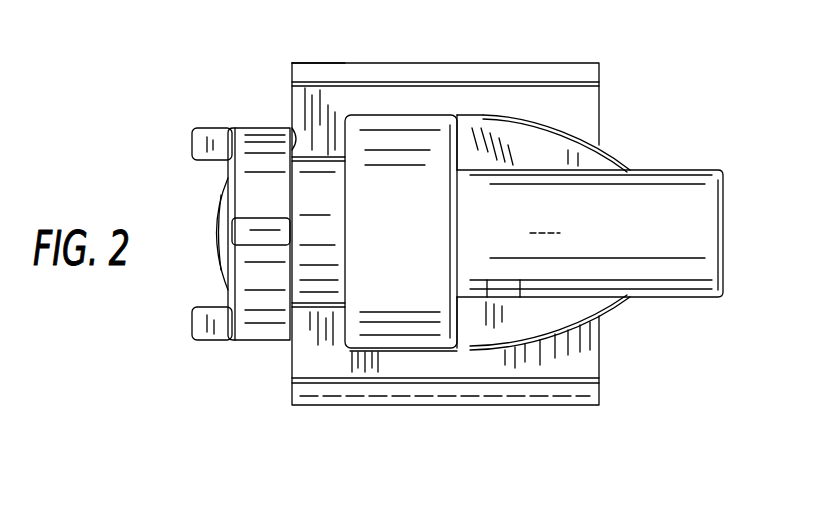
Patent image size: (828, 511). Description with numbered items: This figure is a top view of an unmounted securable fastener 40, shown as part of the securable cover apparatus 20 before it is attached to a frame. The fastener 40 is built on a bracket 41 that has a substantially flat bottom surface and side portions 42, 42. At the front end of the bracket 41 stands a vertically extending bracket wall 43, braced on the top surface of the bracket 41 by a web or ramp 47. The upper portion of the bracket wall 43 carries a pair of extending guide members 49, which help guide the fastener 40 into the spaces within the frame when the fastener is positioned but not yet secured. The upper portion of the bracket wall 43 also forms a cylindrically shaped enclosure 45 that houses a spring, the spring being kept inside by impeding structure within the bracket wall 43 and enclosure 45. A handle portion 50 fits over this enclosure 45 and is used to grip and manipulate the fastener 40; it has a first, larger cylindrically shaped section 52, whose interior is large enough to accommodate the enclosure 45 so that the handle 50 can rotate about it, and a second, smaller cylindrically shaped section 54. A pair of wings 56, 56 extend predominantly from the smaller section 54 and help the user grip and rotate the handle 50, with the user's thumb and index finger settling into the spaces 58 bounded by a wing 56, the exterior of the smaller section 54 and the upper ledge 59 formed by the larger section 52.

The connector assembly 20 is at (440, 7).
The securable fastener 40 is at (672, 65).
The bracket 41 is at (460, 61).
The side portions 42 is at (600, 118).
The bracket wall 43 is at (272, 324).
The cylindrically shaped enclosure 45 is at (333, 312).
The housing shoulder 47 is at (294, 122).
The guide members 49 is at (188, 142).
The handle portion 50 is at (632, 153).
The larger cylindrically shaped section 52 is at (405, 347).
The smaller cylindrically shaped section 54 is at (518, 332).
The wings 56 is at (515, 140).
The spaces 58 is at (486, 300).
The ledge 59 is at (484, 117).